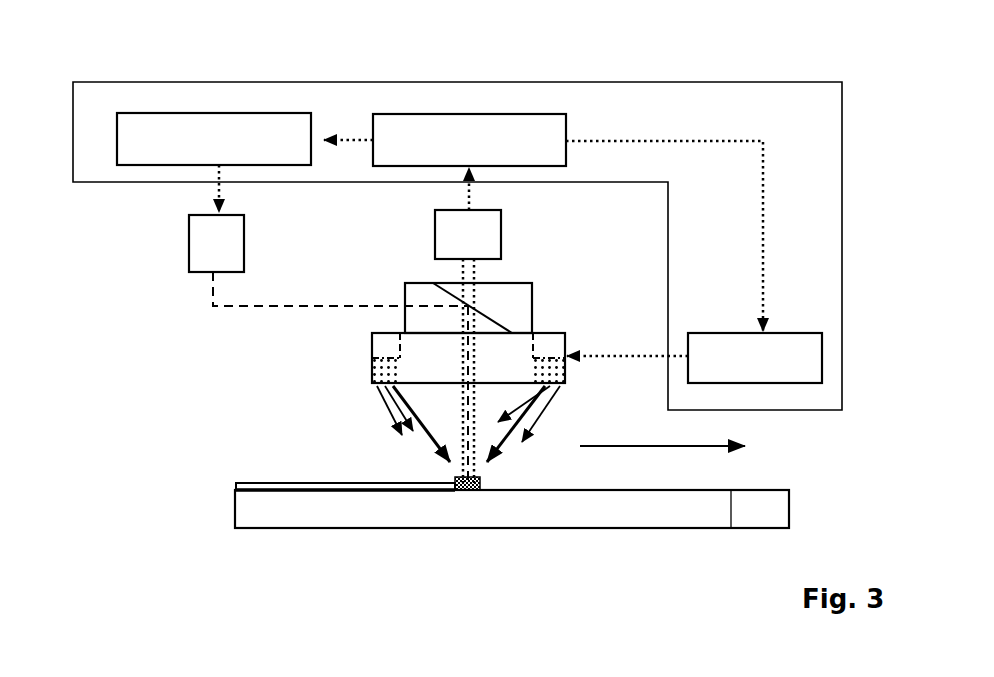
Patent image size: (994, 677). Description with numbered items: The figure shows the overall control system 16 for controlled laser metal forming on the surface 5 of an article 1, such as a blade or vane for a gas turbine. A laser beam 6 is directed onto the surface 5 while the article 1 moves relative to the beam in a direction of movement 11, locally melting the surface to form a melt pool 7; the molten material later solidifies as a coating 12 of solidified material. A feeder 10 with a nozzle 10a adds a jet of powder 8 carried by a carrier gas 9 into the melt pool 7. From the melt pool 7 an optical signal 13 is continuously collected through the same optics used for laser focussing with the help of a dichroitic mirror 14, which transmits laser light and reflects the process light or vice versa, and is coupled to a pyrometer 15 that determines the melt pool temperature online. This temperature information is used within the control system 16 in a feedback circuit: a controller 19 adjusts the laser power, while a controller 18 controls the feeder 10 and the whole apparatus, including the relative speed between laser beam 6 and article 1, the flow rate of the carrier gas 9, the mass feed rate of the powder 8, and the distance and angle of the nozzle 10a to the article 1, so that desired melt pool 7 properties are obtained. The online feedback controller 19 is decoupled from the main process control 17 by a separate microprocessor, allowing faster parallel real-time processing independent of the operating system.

The article 1 is at (296, 504).
The surface of article 5 is at (731, 528).
The laser beam 6 is at (210, 286).
The melt pool 7 is at (472, 490).
The powder 8 is at (437, 445).
The carrier gas 9 is at (393, 415).
The feeder 10 is at (372, 339).
The nozzle 10a is at (360, 383).
The direction of movement 11 is at (625, 446).
The solidified material, coating 12 is at (377, 490).
The optical signal 13 is at (476, 269).
The dichroitic mirror 14 is at (483, 317).
The pyrometer 15 is at (467, 231).
The control system 16 is at (842, 149).
The main process control 17 is at (471, 140).
The controller for feeder and nozzle 18 is at (763, 355).
The controller for laser 19 is at (219, 138).